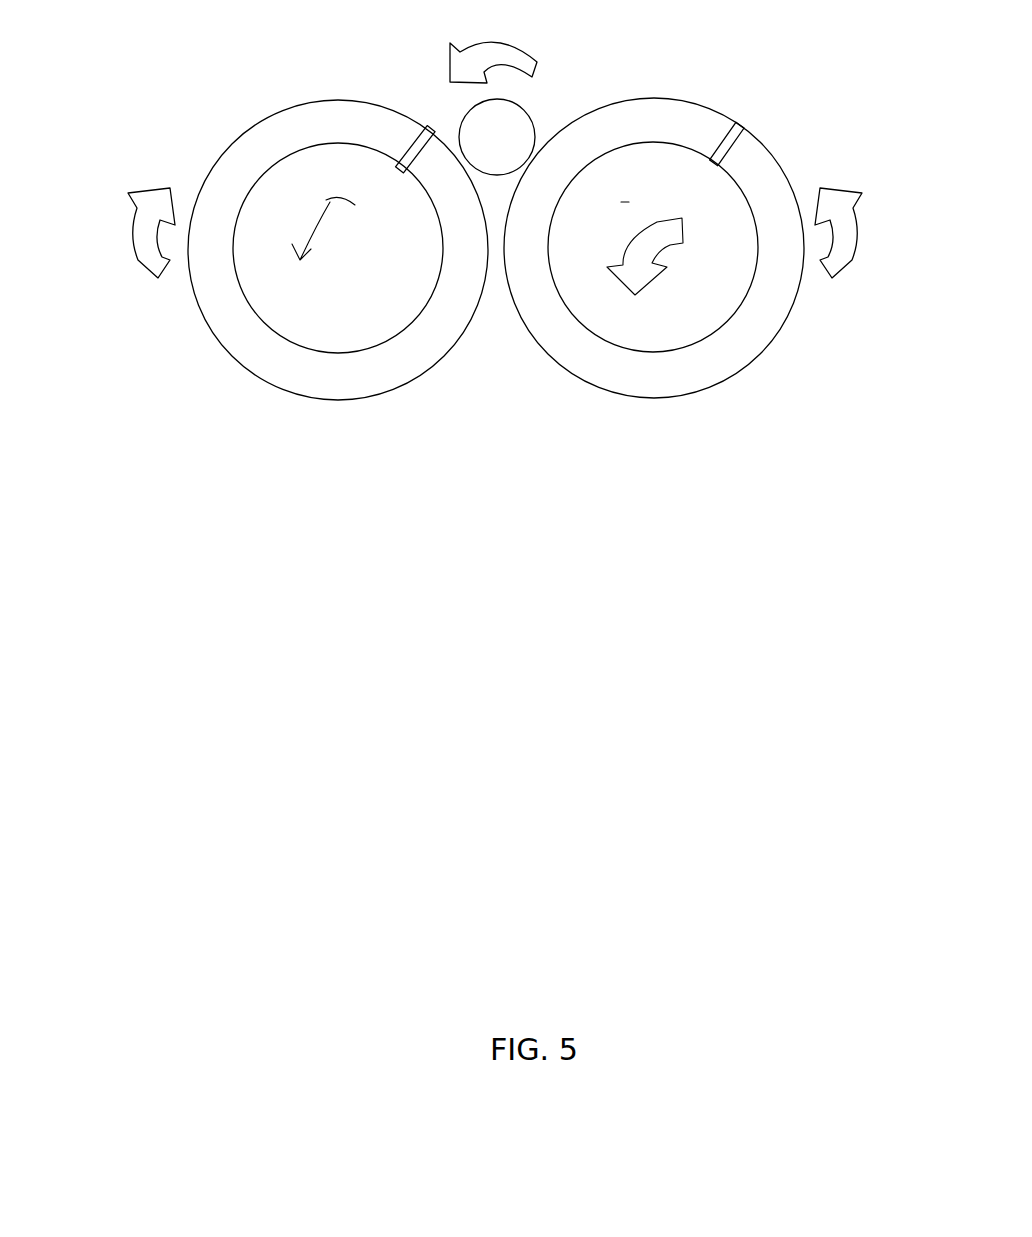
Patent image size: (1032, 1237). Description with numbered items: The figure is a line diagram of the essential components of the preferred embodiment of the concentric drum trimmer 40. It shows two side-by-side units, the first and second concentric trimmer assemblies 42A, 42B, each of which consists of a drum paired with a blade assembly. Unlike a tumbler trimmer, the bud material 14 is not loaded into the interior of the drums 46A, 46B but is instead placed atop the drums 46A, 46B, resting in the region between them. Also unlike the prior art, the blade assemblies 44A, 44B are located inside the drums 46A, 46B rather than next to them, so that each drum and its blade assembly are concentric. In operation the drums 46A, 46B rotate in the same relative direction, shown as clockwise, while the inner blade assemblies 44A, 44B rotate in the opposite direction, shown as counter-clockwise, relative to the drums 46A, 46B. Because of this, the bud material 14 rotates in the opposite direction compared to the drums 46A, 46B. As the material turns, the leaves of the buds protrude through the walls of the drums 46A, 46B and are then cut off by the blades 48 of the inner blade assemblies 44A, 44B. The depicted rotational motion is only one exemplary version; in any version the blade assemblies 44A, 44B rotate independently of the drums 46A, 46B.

The material 14 is at (530, 105).
The concentric drum trimmer 40 is at (106, 790).
The first concentric trimmer assembly 42A is at (314, 375).
The second concentric trimmer assembly 42B is at (703, 375).
The blade assembly 44A is at (413, 323).
The blade assembly 44B is at (743, 300).
The drum 46A is at (205, 318).
The drum 46B is at (783, 168).
The blades 48 is at (402, 135).